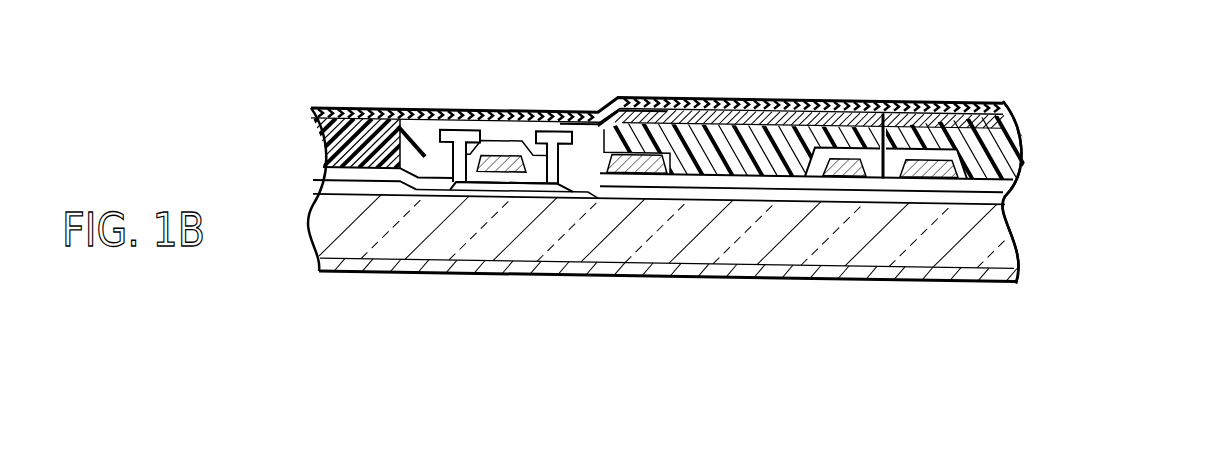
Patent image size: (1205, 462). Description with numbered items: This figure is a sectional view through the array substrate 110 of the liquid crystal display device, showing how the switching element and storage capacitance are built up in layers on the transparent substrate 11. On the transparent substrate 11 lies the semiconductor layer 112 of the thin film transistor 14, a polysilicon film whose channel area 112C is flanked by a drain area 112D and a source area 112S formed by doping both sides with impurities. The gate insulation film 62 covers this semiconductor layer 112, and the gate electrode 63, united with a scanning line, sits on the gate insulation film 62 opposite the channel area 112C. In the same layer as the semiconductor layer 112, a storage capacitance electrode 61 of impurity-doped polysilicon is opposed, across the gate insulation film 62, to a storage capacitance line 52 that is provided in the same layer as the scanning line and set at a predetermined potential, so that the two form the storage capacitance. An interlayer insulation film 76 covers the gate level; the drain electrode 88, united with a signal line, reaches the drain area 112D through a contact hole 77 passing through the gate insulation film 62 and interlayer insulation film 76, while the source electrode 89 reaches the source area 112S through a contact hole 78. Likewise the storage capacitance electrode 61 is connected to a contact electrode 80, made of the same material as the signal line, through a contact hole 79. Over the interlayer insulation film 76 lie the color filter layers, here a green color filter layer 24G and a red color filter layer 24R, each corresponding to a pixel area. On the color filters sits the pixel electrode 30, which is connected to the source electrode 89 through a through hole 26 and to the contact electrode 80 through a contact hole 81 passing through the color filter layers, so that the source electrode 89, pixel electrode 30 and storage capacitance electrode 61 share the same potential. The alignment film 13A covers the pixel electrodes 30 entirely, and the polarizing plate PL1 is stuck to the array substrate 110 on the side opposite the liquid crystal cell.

The transparent substrate 11 is at (318, 226).
The thin film transistor 14 is at (497, 210).
The polarizing plate PL1 is at (818, 274).
The pixel electrode 30 is at (982, 104).
The green color filter layer 24G is at (316, 140).
The red color filter layer 24R is at (1012, 153).
The drain electrode 88 is at (404, 102).
The interlayer insulation film 76 is at (330, 180).
The semiconductor layer 112 is at (447, 194).
The drain area 112D is at (449, 192).
The channel area 112C is at (508, 192).
The source area 112S is at (577, 195).
The gate electrode 63 is at (505, 102).
The contact hole 77 is at (460, 122).
The contact hole 78 is at (540, 130).
The source electrode 89 is at (575, 120).
The through hole 26 is at (662, 100).
The alignment film 13A is at (727, 100).
The storage capacitance line 52 is at (850, 200).
The storage capacitance electrode 61 is at (935, 200).
The contact hole 79 is at (856, 140).
The contact electrode 80 is at (926, 135).
The contact hole 81 is at (888, 140).
The gate insulation film 62 is at (1002, 200).
The array substrate 110 is at (1083, 112).